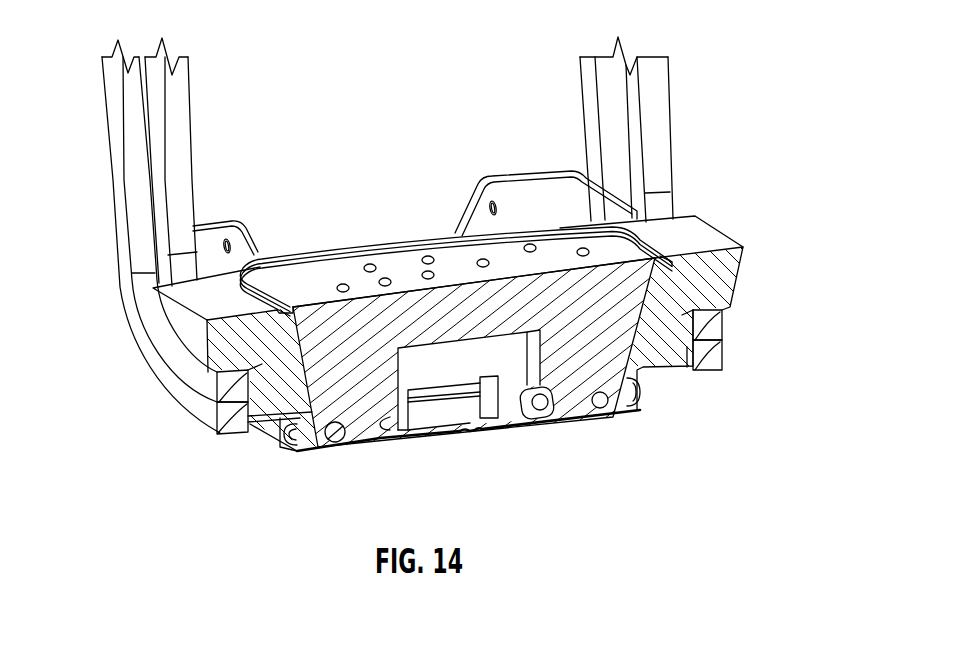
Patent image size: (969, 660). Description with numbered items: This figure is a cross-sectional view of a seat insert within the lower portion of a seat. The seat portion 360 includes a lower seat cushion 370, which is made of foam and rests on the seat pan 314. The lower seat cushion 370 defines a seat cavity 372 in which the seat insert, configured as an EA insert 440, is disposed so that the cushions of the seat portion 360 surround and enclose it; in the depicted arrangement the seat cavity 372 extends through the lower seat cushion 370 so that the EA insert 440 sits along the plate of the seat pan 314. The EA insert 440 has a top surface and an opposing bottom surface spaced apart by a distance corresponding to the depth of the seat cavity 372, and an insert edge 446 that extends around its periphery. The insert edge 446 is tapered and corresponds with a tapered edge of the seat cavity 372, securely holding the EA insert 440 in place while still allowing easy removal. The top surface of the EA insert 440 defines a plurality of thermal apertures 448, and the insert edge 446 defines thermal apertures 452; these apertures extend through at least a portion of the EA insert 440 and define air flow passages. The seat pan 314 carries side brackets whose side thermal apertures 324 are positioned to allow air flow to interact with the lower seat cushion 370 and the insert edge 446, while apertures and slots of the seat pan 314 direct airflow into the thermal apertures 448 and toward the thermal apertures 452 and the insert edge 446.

The seat portion 360 is at (386, 70).
The lower seat cushion 370 is at (272, 262).
The seat cavity 372 is at (257, 276).
The EA insert 440 is at (318, 268).
The thermal apertures 448 is at (583, 248).
The seat pan 314 is at (491, 444).
The side thermal apertures 324 is at (263, 443).
The insert edge 446 is at (303, 453).
The thermal apertures 452 is at (334, 452).